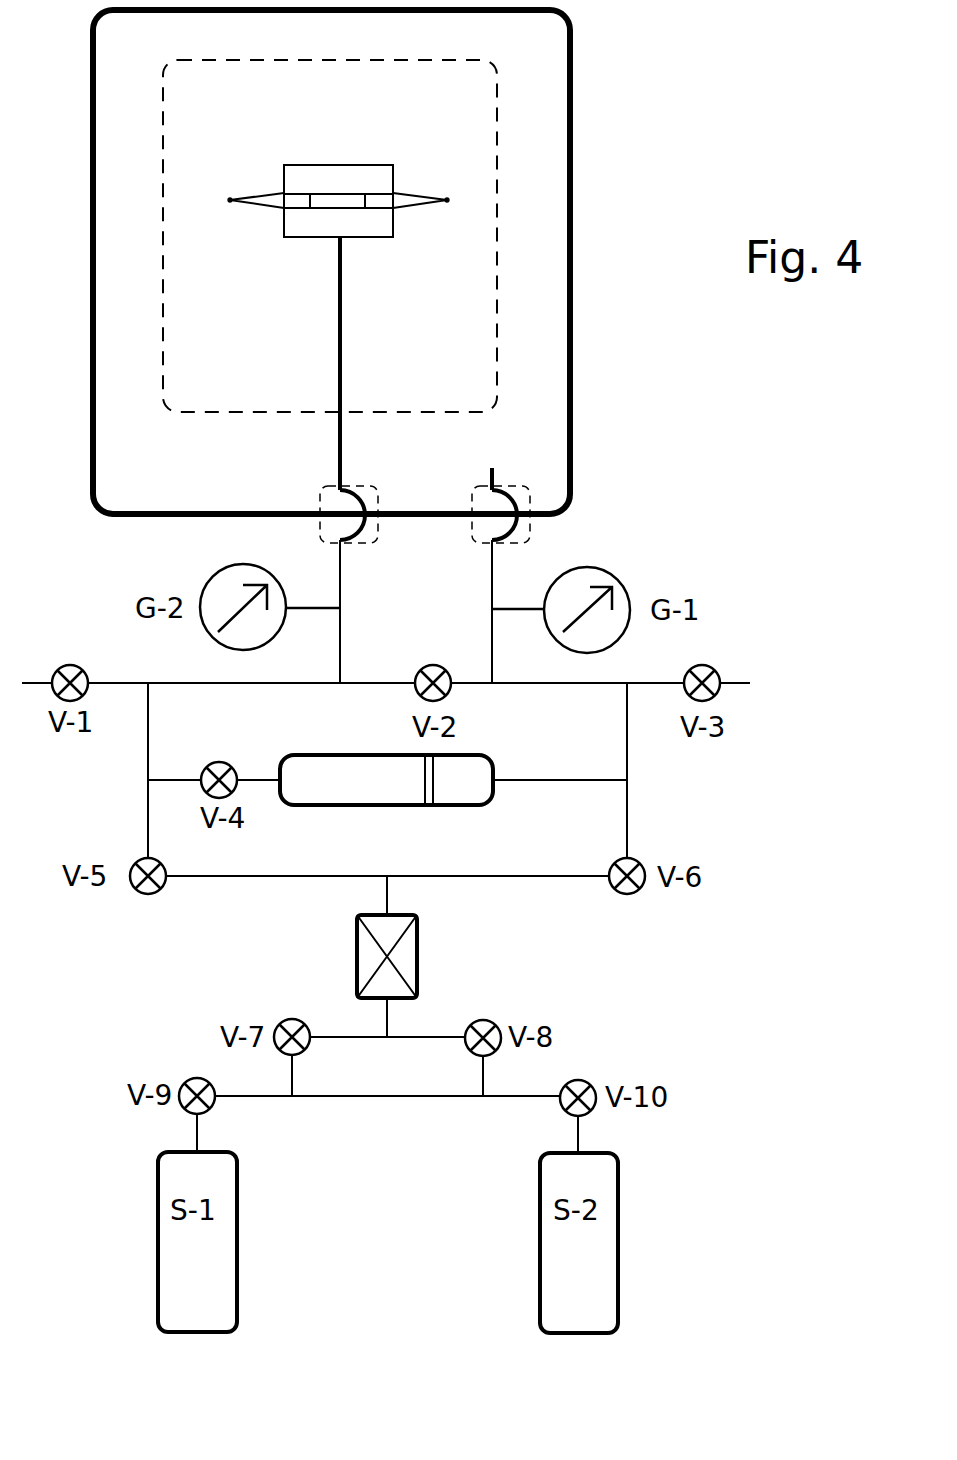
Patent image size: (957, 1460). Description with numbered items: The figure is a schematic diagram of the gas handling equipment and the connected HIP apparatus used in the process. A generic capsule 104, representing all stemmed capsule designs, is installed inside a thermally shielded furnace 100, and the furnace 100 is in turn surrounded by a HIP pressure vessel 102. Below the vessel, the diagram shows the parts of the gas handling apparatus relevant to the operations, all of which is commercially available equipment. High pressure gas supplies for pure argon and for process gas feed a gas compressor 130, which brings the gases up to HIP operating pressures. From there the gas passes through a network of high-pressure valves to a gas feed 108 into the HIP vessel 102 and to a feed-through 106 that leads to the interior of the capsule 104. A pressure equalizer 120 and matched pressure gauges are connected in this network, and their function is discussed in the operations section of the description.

The thermally shielded furnace 100 is at (507, 162).
The HIP pressure vessel 102 is at (575, 45).
The generic capsule 104 is at (345, 150).
The feed-through 106 is at (318, 497).
The gas feed 108 is at (520, 487).
The pressure equalizer 120 is at (497, 795).
The gas compressor 130 is at (422, 952).